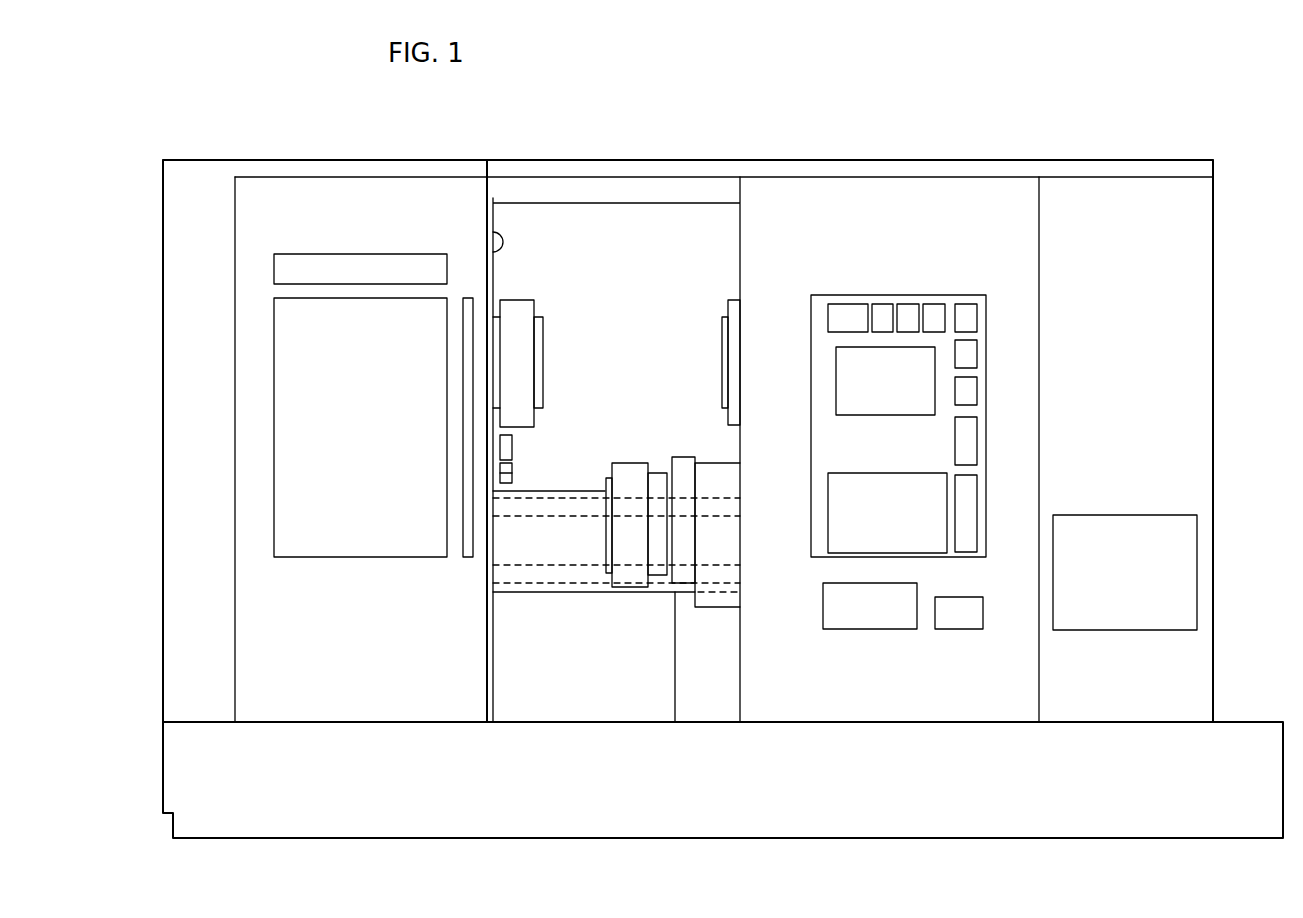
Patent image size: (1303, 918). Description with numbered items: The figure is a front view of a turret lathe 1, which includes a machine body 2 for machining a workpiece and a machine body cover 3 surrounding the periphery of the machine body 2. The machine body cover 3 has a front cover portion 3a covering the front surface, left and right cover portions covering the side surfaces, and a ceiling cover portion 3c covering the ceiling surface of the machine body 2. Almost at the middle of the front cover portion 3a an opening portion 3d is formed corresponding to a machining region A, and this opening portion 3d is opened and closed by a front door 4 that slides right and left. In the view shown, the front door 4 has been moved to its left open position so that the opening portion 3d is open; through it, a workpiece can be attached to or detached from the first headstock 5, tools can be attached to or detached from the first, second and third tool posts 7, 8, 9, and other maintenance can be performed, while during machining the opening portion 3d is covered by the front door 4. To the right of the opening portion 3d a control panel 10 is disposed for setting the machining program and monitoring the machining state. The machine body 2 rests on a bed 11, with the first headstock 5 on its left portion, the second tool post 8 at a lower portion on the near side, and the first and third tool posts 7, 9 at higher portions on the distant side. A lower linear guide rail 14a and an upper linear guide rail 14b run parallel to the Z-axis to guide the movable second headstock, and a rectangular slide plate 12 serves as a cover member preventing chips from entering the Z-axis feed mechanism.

The turret lathe 1 is at (723, 142).
The machine body 2 is at (580, 312).
The machine body cover 3 is at (574, 160).
The front cover portion 3a is at (185, 563).
The ceiling cover portion 3c is at (407, 160).
The opening portion 3d is at (487, 232).
The front door 4 is at (233, 355).
The first headstock 5 is at (513, 447).
The first tool post 7 is at (519, 298).
The second tool post 8 is at (633, 462).
The third tool post 9 is at (728, 297).
The control panel 10 is at (987, 367).
The bed 11 is at (755, 825).
The slide plate 12 is at (562, 490).
The lower linear guide rail 14a is at (552, 583).
The upper linear guide rail 14b is at (577, 497).
The machining region A is at (620, 367).